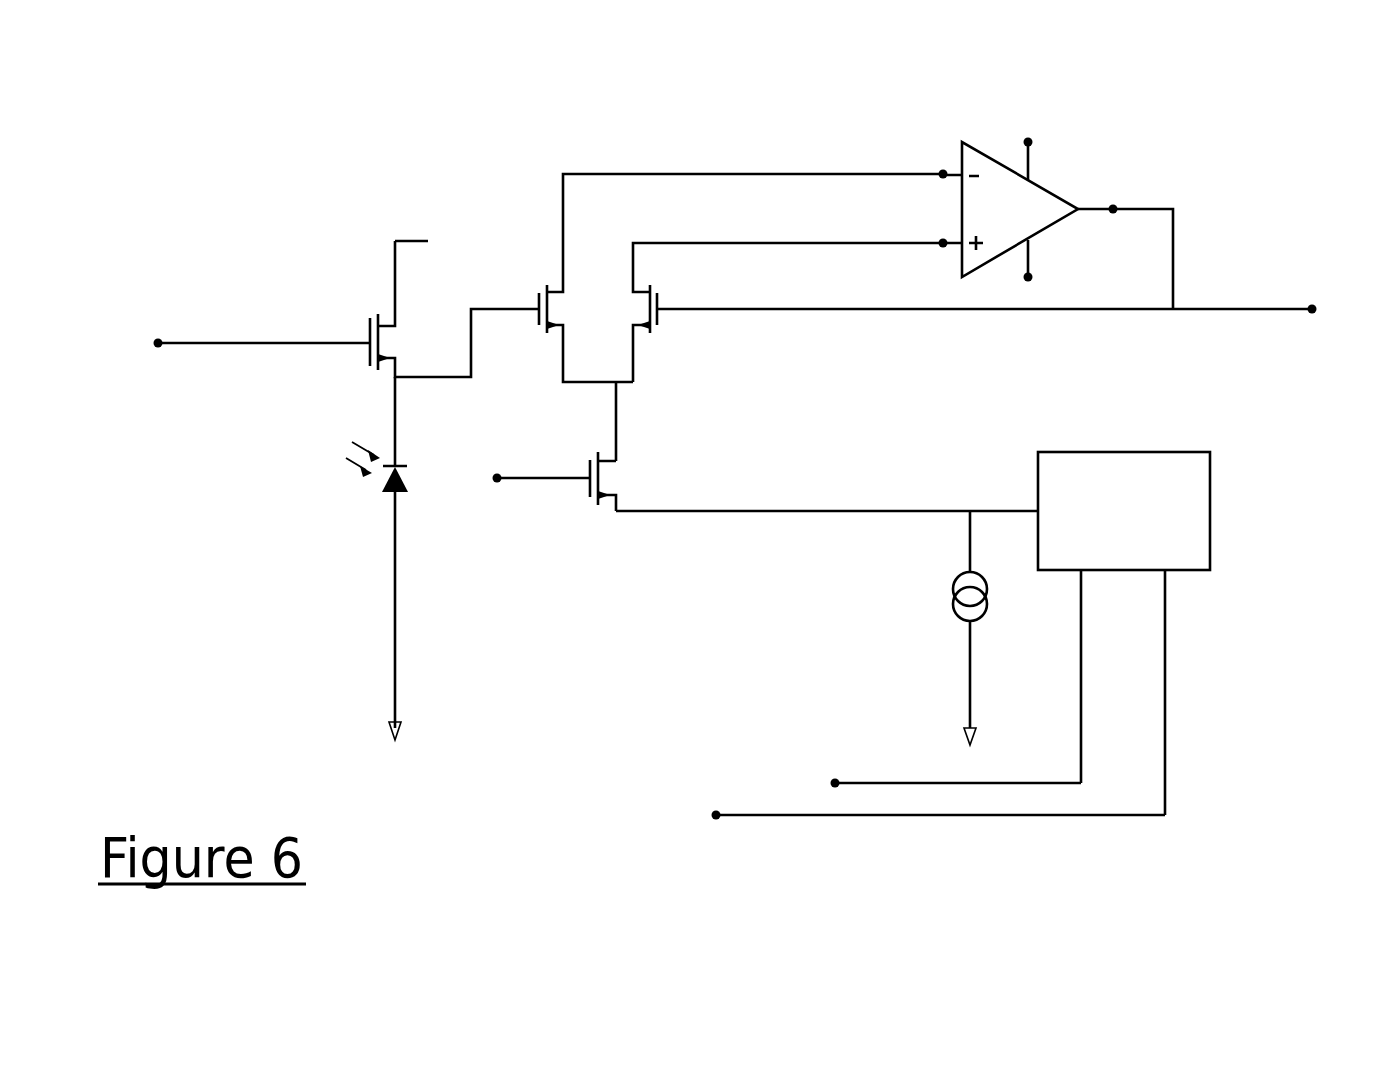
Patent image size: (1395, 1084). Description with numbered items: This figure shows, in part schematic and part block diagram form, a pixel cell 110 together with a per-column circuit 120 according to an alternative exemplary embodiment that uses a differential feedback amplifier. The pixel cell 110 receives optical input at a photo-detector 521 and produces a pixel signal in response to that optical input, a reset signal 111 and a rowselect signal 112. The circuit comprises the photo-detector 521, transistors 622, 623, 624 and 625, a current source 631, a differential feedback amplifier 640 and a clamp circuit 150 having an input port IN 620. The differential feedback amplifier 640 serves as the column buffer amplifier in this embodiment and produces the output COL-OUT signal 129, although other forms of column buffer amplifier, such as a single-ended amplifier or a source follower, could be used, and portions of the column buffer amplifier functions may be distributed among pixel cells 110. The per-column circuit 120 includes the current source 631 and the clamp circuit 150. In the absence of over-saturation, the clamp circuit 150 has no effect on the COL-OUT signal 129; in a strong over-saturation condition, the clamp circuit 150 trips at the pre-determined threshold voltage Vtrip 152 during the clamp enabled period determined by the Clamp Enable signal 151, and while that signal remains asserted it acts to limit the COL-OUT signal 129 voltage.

The reset signal 111 is at (158, 343).
The rowselect signal 112 is at (500, 470).
The COL-OUT signal 129 is at (1312, 309).
The clamp circuit 150 is at (1165, 448).
The Clamp Enable signal 151 is at (716, 815).
The Vtrip threshold voltage 152 is at (835, 783).
The per-column circuit 120 is at (1235, 712).
The pixel cell 110 is at (567, 643).
The photo-detector 521 is at (398, 494).
The transistor 622 is at (402, 332).
The transistor 623 is at (538, 282).
The transistor 624 is at (665, 292).
The transistor 625 is at (622, 478).
The differential feedback amplifier 640 is at (1018, 206).
The input port IN 620 is at (1030, 508).
The current source 631 is at (983, 617).